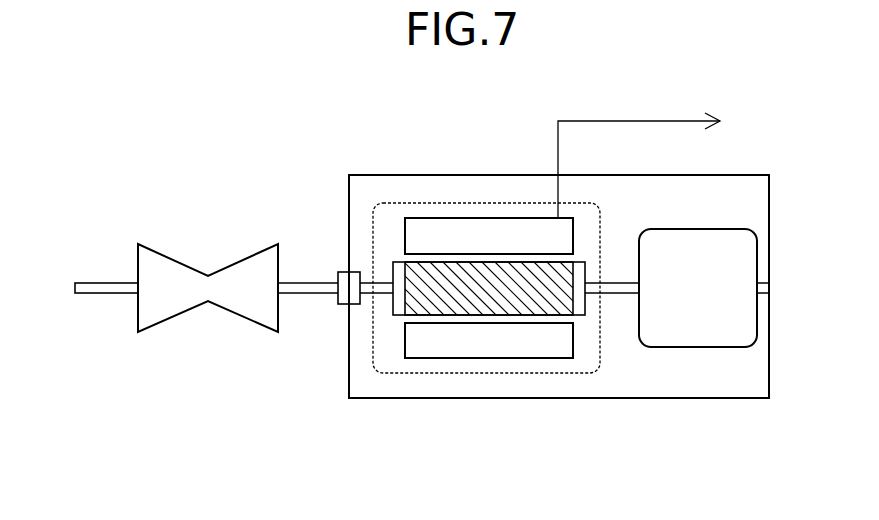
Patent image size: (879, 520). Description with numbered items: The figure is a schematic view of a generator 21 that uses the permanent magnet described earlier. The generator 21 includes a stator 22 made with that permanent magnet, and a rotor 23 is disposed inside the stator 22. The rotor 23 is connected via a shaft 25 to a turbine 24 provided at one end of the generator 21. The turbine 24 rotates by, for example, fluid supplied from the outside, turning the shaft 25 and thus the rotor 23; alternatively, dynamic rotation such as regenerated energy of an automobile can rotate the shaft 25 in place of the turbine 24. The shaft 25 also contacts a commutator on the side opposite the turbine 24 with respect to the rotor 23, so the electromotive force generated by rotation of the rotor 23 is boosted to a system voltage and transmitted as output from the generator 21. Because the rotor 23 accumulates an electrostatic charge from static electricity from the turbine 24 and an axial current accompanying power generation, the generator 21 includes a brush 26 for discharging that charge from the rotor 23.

The generator 21 is at (392, 172).
The stator 22 is at (457, 348).
The rotor 23 is at (502, 308).
The turbine 24 is at (248, 255).
The shaft 25 is at (312, 293).
The brush 26 is at (689, 330).